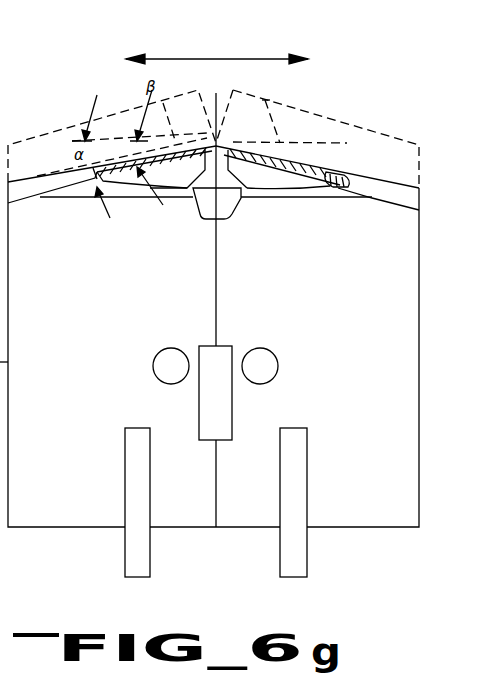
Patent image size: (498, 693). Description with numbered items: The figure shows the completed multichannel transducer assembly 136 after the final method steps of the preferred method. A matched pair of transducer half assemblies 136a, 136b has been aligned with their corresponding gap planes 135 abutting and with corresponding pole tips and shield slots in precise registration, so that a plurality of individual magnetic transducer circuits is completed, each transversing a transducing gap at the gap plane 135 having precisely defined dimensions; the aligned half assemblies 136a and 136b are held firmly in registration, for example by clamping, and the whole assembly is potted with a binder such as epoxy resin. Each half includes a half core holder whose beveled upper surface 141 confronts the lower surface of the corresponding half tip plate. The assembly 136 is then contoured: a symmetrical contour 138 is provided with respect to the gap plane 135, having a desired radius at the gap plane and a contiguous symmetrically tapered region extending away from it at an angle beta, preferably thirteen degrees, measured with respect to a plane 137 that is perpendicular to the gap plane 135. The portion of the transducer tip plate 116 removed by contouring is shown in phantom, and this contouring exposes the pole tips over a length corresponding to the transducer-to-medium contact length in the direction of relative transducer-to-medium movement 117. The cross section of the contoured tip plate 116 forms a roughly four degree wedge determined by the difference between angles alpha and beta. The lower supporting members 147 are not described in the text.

The direction of relative transducer-to-medium movement 117 is at (210, 58).
The multichannel transducer assembly 136 is at (316, 87).
The gap plane 135 is at (242, 275).
The plane perpendicular to the gap plane 137 is at (297, 140).
The symmetrical contour 138 is at (222, 138).
The transducer tip plate 116 is at (307, 167).
The beveled upper surface of the holder 141 is at (328, 187).
The transducer half assembly 136b is at (108, 357).
The transducer half assembly 136a is at (352, 357).
The legs 147 is at (280, 542).